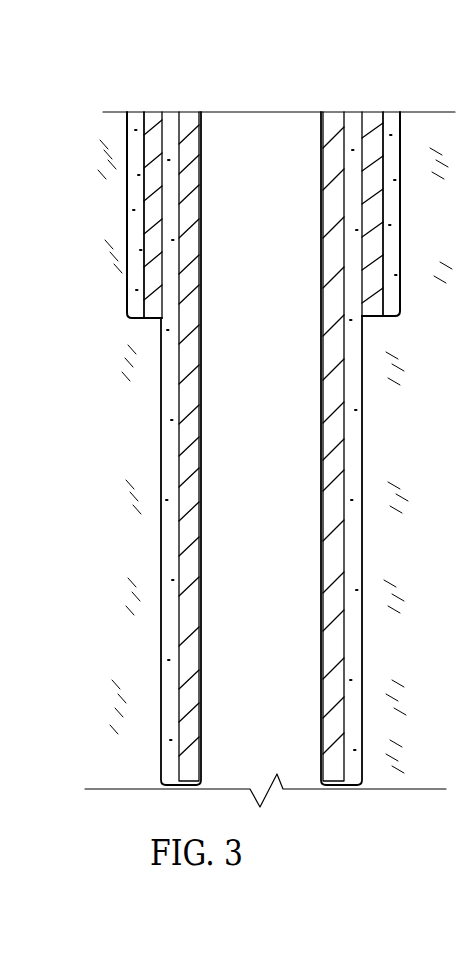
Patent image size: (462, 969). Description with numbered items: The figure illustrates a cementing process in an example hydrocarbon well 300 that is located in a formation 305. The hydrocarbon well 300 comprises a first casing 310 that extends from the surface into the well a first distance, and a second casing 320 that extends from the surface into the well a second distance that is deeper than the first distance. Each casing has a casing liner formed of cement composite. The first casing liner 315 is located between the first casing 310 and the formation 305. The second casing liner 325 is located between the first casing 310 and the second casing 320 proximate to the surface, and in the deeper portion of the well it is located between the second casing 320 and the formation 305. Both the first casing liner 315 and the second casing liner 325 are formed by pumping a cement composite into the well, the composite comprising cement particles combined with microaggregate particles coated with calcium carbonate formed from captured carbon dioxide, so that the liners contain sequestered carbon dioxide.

The hydrocarbon well 300 is at (93, 73).
The formation 305 is at (450, 199).
The first casing 310 is at (147, 267).
The first casing liner 315 is at (128, 206).
The second casing 320 is at (180, 497).
The second casing liner 325 is at (165, 448).